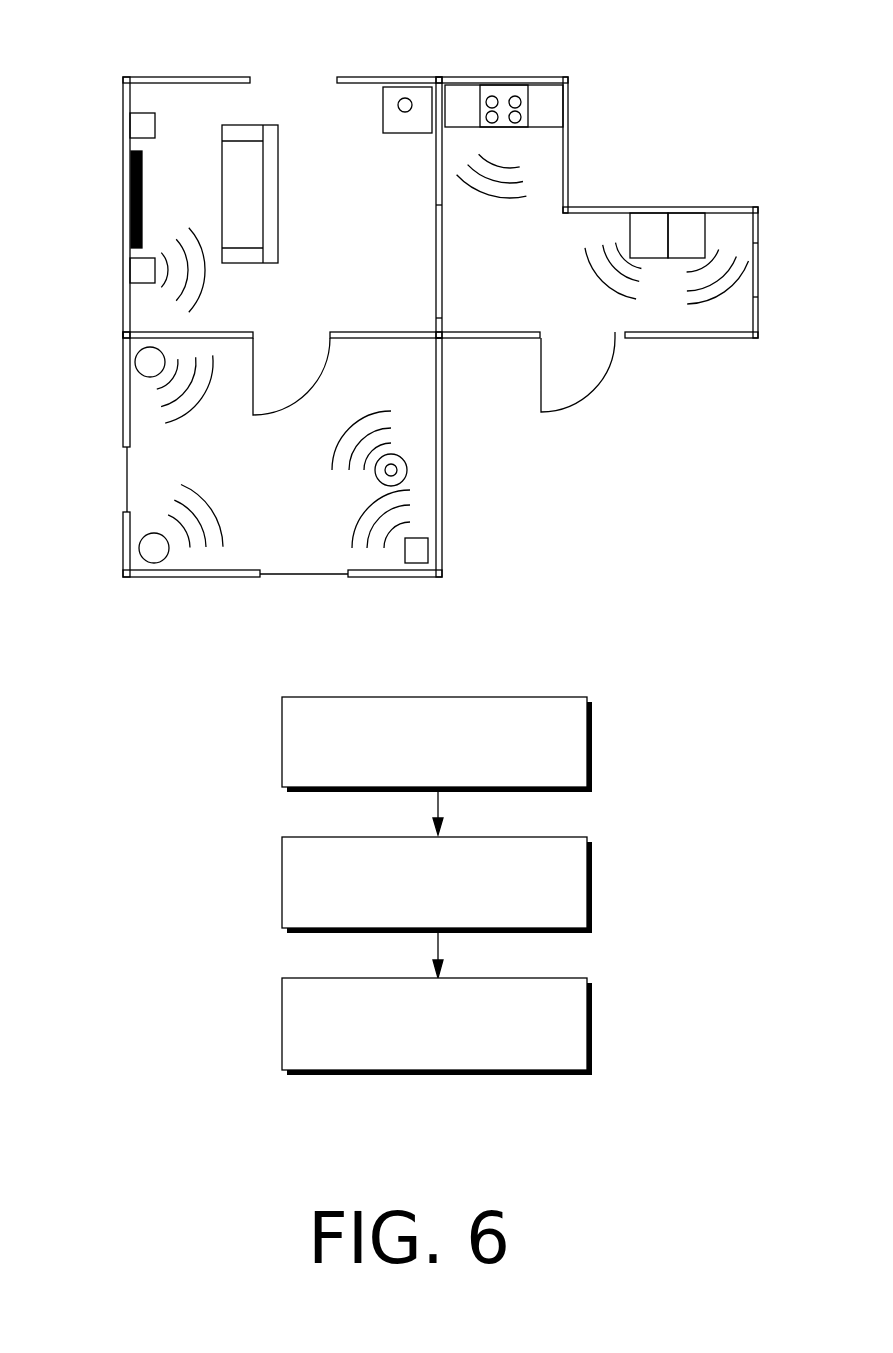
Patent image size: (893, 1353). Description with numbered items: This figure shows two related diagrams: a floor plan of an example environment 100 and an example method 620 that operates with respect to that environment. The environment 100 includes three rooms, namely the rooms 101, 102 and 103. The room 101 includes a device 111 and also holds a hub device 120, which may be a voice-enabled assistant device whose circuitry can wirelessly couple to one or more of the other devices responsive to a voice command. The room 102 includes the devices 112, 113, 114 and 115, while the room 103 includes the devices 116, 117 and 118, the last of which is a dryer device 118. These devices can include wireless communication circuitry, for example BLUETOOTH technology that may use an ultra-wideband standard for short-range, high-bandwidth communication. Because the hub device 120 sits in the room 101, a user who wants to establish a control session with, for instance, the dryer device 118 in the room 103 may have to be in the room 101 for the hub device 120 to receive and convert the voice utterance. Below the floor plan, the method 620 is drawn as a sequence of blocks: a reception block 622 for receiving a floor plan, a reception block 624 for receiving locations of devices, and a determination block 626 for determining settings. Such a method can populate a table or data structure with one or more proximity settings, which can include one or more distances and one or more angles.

The environment 100 is at (413, 26).
The room 101 is at (341, 281).
The room 102 is at (272, 475).
The room 103 is at (539, 279).
The device 111 is at (130, 265).
The device 112 is at (135, 362).
The device 113 is at (139, 550).
The device 114 is at (428, 552).
The device 115 is at (378, 478).
The device 116 is at (510, 83).
The device 117 is at (648, 213).
The dryer device 118 is at (685, 213).
The hub device 120 is at (398, 107).
The method 620 is at (488, 669).
The reception block 622 is at (450, 768).
The reception block 624 is at (450, 910).
The determination block 626 is at (450, 1053).